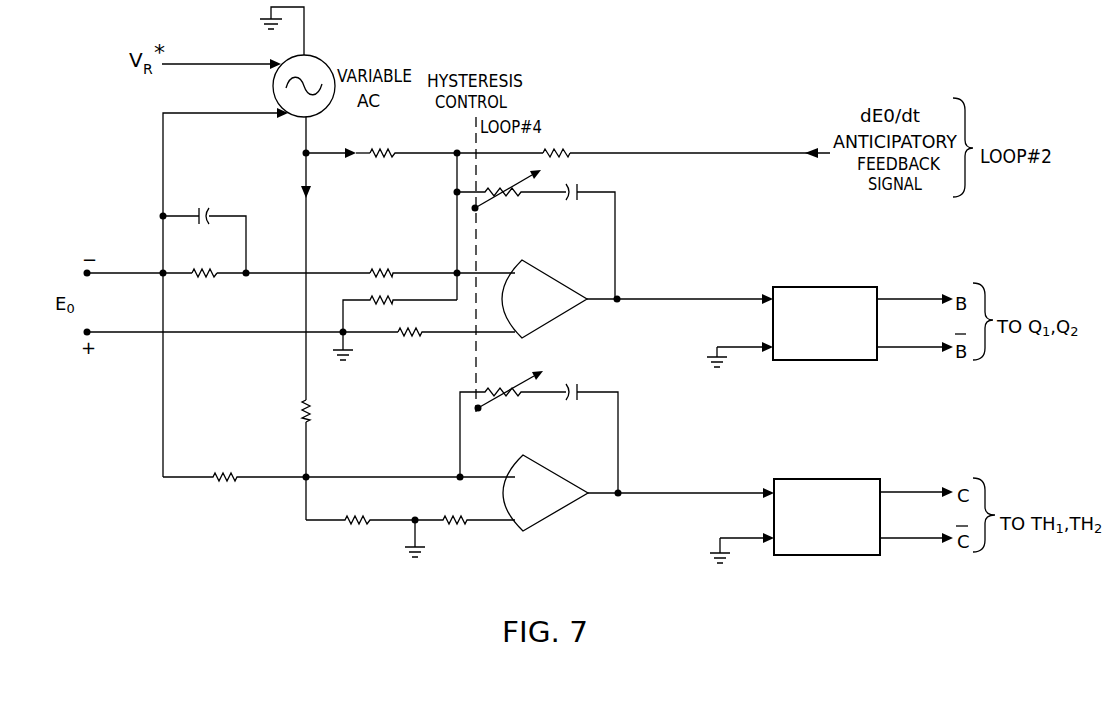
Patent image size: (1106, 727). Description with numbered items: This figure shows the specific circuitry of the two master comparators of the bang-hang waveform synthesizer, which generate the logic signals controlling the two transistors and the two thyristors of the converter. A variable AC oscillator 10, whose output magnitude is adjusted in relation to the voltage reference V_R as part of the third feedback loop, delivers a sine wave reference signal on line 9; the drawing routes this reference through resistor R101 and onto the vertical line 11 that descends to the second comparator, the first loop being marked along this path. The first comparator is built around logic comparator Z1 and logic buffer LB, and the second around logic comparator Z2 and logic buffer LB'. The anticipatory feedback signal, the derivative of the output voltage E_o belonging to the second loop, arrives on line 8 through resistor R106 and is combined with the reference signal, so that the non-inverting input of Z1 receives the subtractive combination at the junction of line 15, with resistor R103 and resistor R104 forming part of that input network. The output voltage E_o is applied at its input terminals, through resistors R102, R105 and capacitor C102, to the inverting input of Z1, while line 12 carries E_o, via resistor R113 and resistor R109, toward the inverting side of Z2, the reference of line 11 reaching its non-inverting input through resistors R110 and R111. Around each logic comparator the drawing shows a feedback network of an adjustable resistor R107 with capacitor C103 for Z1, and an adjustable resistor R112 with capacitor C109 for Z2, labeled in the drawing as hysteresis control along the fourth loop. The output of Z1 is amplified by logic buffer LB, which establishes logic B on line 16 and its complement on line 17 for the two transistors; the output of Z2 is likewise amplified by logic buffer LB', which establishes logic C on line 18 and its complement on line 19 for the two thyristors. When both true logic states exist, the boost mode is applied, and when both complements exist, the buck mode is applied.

The line 8 is at (624, 150).
The line 9 is at (333, 153).
The oscillator 10 is at (326, 62).
The line 11 is at (306, 365).
The line 12 is at (166, 372).
The line 15 is at (457, 266).
The line 16 is at (912, 301).
The line 17 is at (913, 349).
The line 18 is at (915, 494).
The line 19 is at (915, 540).
The resistor R101 is at (375, 144).
The resistor R102 is at (203, 280).
The resistor R103 is at (387, 259).
The resistor R104 is at (375, 296).
The resistor R105 is at (405, 340).
The resistor R106 is at (556, 148).
The variable resistor (hysteresis control) R107 is at (507, 200).
The resistor R109 is at (317, 415).
The resistor R110 is at (351, 514).
The resistor R111 is at (444, 513).
The variable resistor (hysteresis control) R112 is at (506, 402).
The resistor R113 is at (222, 471).
The capacitor C102 is at (210, 204).
The capacitor C103 is at (580, 180).
The capacitor C109 is at (581, 383).
The logic comparator Z1 is at (538, 312).
The logic comparator Z2 is at (547, 505).
The logic buffer LB is at (792, 313).
The logic buffer LB' is at (795, 510).